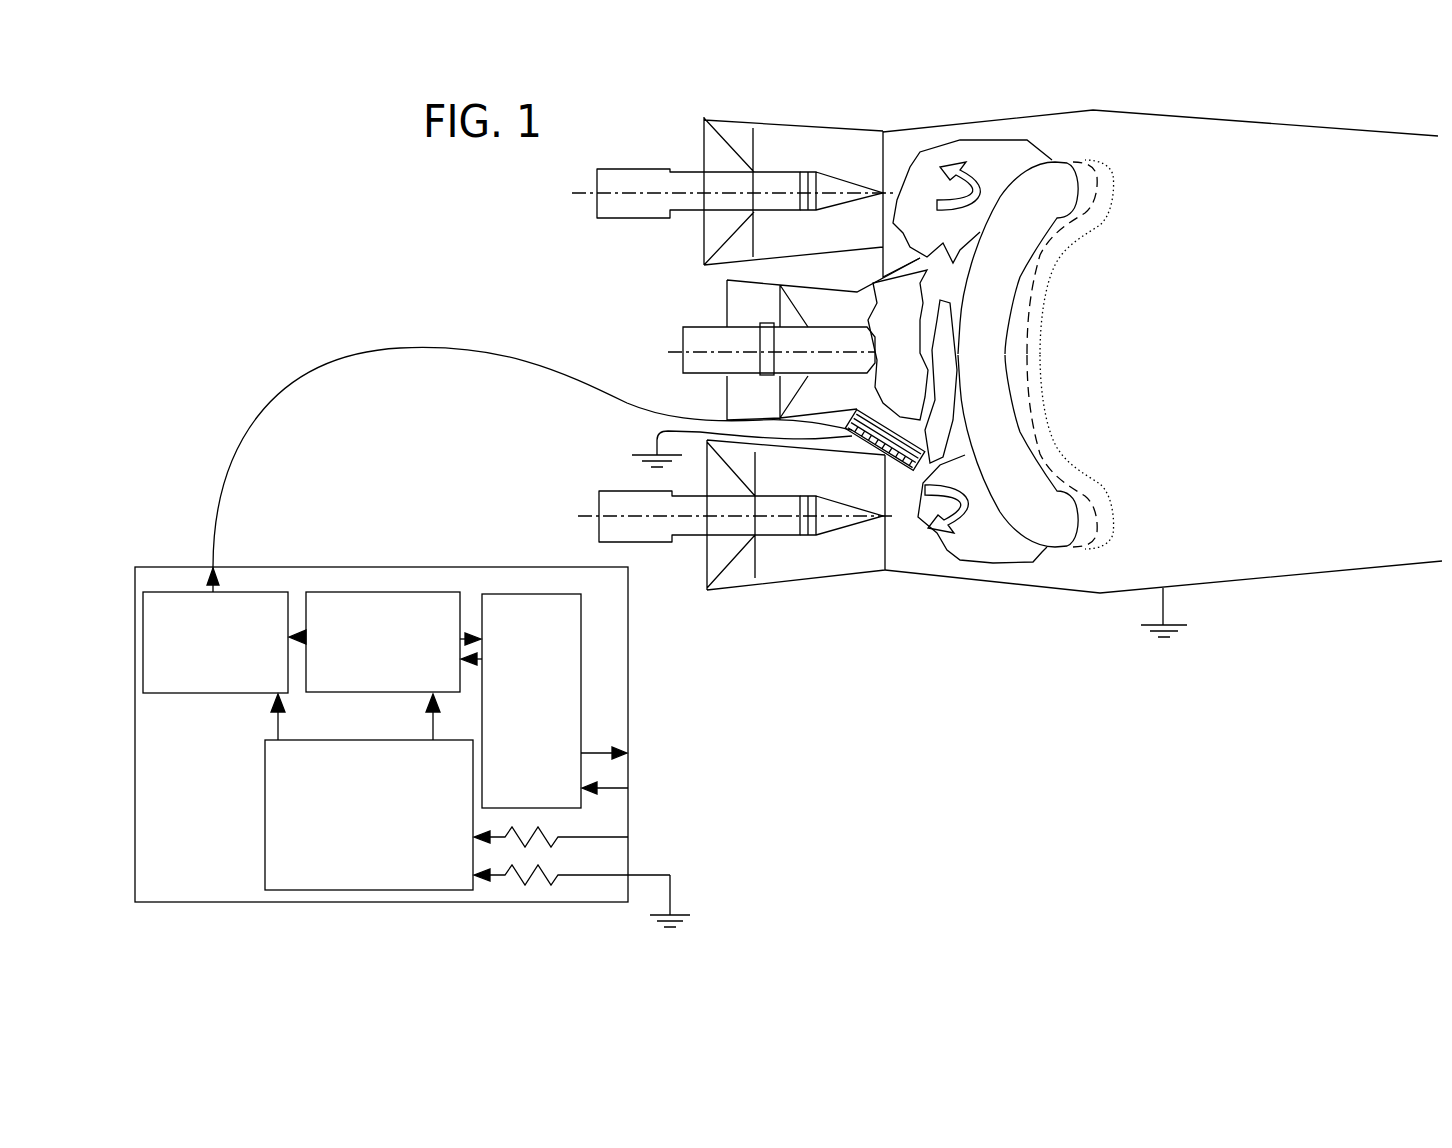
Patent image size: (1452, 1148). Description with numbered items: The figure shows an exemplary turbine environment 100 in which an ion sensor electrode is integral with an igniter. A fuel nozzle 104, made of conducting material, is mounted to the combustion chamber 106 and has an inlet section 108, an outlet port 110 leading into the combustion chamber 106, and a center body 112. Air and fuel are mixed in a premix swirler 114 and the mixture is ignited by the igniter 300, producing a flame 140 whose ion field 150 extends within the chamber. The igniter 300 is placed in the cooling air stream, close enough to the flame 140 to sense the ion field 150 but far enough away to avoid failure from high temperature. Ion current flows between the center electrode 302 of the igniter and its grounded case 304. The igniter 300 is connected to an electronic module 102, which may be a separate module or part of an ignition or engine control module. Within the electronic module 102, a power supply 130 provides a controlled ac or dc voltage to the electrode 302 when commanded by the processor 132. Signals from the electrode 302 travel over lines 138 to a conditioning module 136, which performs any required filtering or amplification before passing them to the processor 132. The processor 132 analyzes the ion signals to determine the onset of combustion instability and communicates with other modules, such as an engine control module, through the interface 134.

The turbine environment 100 is at (405, 261).
The electronic module 102 is at (437, 747).
The fuel nozzle 104 is at (729, 335).
The combustion chamber 106 is at (1175, 548).
The inlet section 108 is at (706, 327).
The outlet port 110 is at (888, 371).
The center body 112 is at (771, 327).
The premix swirler 114 is at (795, 298).
The power supply 130 is at (195, 682).
The processor 132 is at (357, 680).
The interface 134 is at (509, 711).
The conditioning module 136 is at (354, 872).
The lines 138 is at (620, 833).
The flame 140 is at (1105, 257).
The ion field 150 is at (990, 160).
The igniter 300 is at (896, 570).
The center electrode 302 is at (925, 465).
The grounded case 304 is at (870, 453).